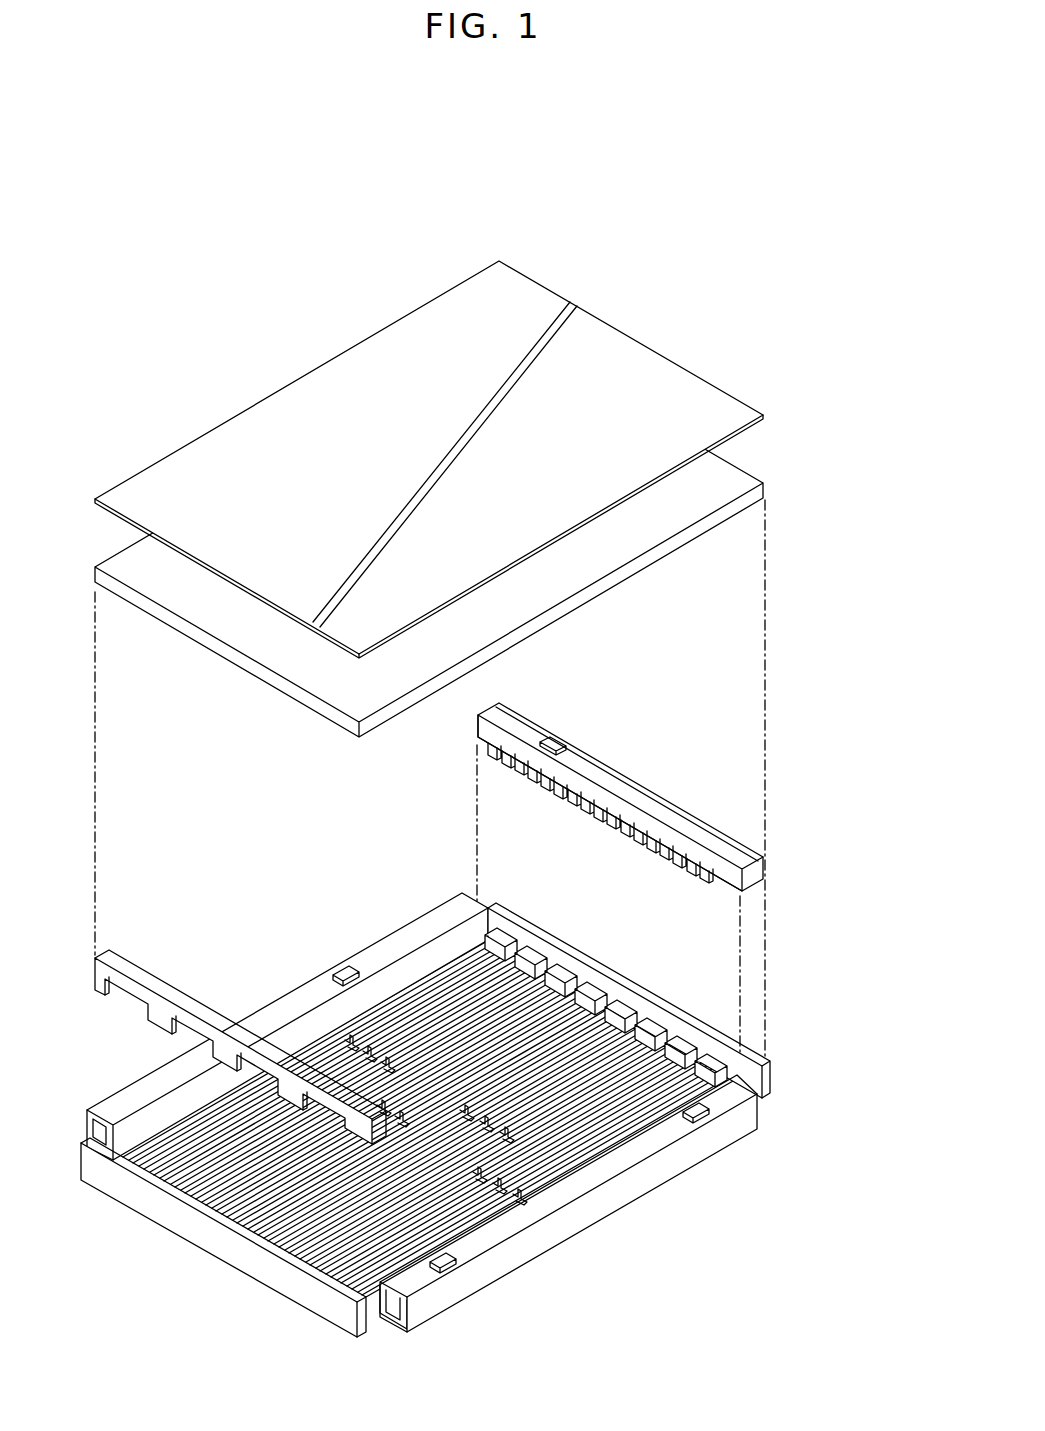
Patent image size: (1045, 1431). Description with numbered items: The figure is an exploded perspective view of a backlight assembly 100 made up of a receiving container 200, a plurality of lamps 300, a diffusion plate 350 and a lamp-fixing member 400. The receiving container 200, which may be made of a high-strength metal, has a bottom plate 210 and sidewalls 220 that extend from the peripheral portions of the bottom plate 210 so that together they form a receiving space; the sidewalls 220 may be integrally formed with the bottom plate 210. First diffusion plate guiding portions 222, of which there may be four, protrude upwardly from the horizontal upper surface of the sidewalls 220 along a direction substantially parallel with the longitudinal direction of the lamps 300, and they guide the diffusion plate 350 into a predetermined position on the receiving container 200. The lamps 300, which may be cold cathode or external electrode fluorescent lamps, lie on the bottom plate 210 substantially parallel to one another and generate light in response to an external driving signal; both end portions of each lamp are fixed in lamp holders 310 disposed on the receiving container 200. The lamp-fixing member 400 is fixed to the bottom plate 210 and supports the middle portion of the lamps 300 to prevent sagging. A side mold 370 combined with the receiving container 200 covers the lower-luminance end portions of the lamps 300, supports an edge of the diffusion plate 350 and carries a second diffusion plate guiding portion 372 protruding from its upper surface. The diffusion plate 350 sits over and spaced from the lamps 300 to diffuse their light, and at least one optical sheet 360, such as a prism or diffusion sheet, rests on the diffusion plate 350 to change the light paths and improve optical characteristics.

The backlight assembly 100 is at (478, 761).
The receiving container 200 is at (478, 1105).
The bottom plate 210 is at (633, 1118).
The sidewalls 220 is at (735, 1122).
The first diffusion plate guiding portion 222 is at (447, 1262).
The lamps 300 is at (435, 1236).
The lamp holders 310 is at (515, 932).
The diffusion plate 350 is at (777, 481).
The optical sheet 360 is at (775, 414).
The side mold 370 is at (620, 784).
The second diffusion plate guiding portion 372 is at (558, 738).
The lamp-fixing member 400 is at (527, 1132).